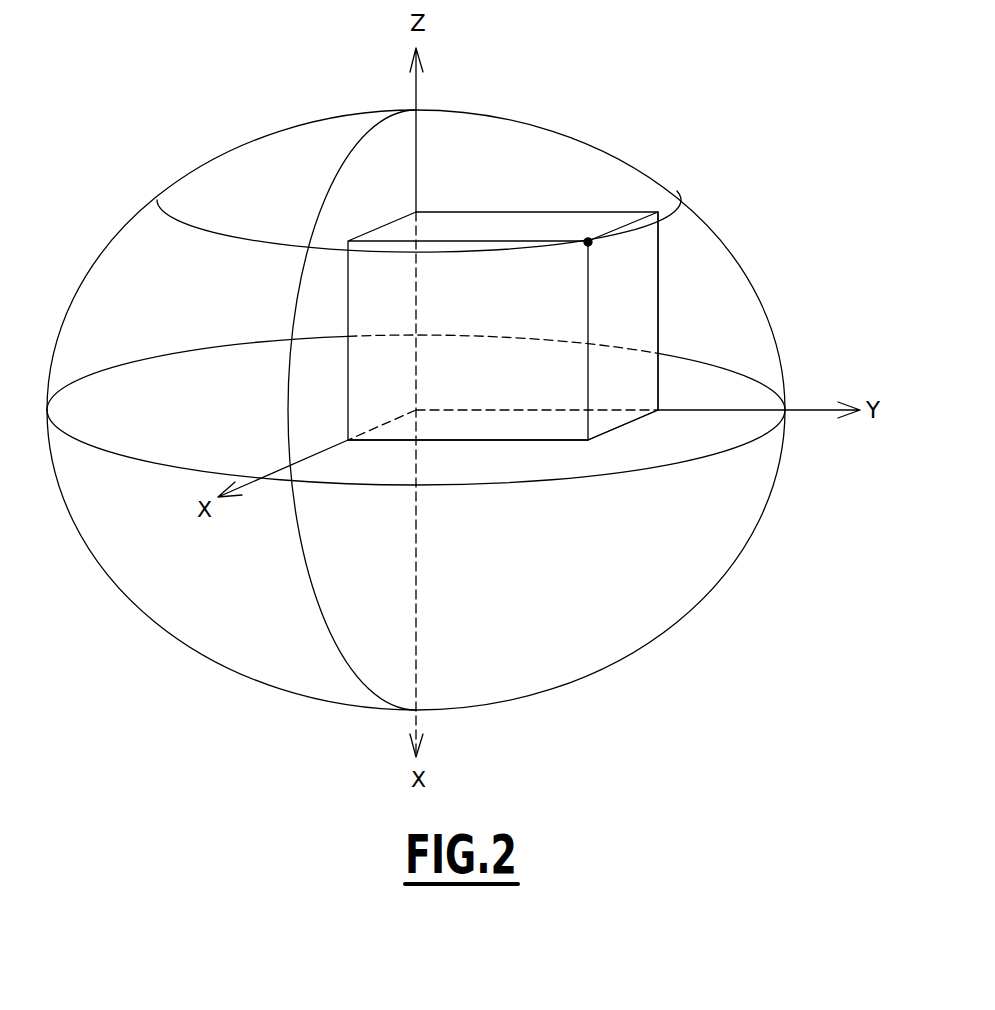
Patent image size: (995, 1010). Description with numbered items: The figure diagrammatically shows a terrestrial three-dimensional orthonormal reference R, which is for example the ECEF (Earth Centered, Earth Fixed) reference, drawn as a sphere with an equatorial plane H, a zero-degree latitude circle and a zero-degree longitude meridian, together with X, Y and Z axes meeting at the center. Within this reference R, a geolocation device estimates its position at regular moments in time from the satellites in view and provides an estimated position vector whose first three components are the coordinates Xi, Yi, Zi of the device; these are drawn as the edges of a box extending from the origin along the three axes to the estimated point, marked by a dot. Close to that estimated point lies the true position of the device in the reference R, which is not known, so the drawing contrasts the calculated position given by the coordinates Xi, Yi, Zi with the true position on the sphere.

The three-dimensional orthonormal reference R is at (424, 133).
The equatorial (0° latitude) horizon plane H is at (640, 420).
The X coordinate Xi is at (623, 437).
The Y coordinate Yi is at (468, 457).
The Z coordinate Zi is at (674, 311).